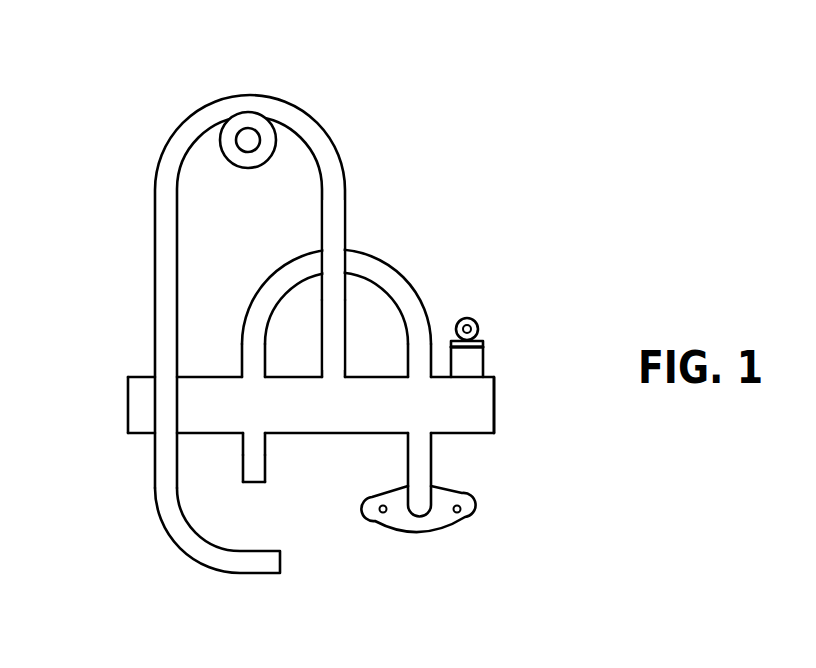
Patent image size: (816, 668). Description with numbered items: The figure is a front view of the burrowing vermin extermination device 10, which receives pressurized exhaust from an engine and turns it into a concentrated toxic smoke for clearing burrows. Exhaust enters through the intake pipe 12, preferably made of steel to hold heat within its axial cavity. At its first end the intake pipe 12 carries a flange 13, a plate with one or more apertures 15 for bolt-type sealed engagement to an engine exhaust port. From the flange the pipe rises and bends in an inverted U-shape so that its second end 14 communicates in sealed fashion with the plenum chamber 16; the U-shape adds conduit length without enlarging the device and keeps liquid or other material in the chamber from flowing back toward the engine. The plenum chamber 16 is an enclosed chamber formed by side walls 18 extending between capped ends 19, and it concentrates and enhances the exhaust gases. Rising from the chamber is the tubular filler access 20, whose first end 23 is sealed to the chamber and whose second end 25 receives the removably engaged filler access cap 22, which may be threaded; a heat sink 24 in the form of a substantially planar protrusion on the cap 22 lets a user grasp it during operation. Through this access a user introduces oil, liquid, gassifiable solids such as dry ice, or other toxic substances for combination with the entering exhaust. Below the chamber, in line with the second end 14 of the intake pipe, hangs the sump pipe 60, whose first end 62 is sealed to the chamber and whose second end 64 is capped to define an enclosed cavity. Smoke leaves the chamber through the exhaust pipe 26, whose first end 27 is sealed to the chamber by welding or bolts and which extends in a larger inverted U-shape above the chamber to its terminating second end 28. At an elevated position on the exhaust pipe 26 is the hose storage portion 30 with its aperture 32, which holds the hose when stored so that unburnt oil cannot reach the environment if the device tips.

The burrowing vermin extermination device 10 is at (400, 167).
The intake pipe 12 is at (390, 260).
The flange 13 is at (468, 510).
The second end 14 is at (242, 370).
The apertures 15 is at (387, 515).
The plenum chamber 16 is at (342, 433).
The side walls 18 is at (368, 424).
The capped ends 19 is at (125, 420).
The filler access 20 is at (482, 361).
The filler access cap 22 is at (483, 340).
The first end 23 is at (447, 374).
The heat sink 24 is at (477, 318).
The second end 25 is at (482, 350).
The exhaust pipe 26 is at (155, 228).
The first end 27 is at (345, 375).
The second end 28 is at (280, 573).
The hose storage portion 30 is at (242, 163).
The aperture 32 is at (248, 127).
The sump pipe 60 is at (242, 452).
The first end 62 is at (247, 431).
The second end 64 is at (263, 483).